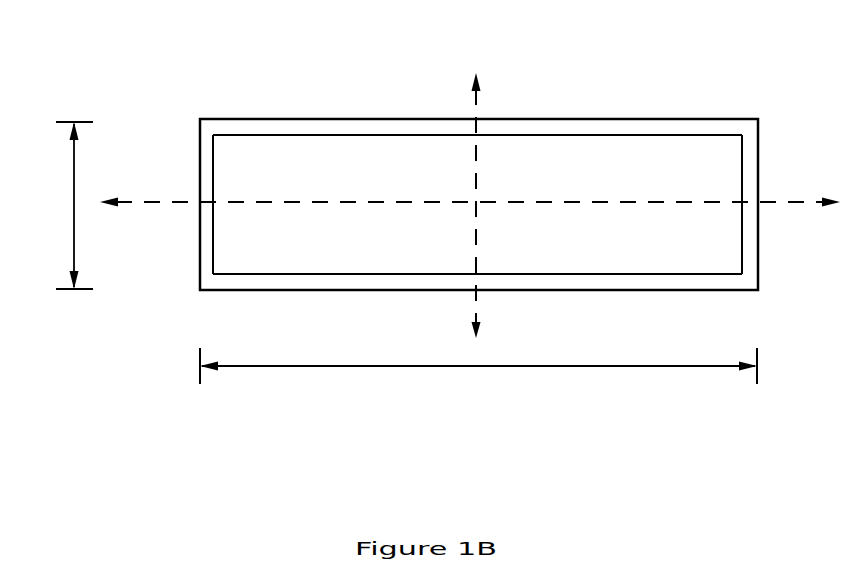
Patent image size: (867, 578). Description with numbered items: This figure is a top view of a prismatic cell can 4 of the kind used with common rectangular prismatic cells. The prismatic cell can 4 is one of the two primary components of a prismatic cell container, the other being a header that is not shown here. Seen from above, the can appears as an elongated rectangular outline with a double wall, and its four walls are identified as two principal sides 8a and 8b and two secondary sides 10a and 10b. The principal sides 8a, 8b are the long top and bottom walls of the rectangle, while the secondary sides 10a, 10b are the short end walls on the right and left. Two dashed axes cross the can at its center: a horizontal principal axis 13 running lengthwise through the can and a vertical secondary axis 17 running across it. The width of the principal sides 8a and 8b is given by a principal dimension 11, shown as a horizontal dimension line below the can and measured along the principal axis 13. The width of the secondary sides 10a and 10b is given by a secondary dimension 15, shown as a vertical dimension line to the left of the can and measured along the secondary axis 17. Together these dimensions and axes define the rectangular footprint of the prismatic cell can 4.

The prismatic cell can 4 is at (684, 73).
The principal side 8a is at (338, 278).
The principal side 8b is at (413, 128).
The secondary side 10a is at (750, 178).
The secondary side 10b is at (200, 237).
The principal dimension 11 is at (597, 367).
The principal axis 13 is at (785, 203).
The secondary dimension 15 is at (74, 203).
The secondary axis 17 is at (478, 303).